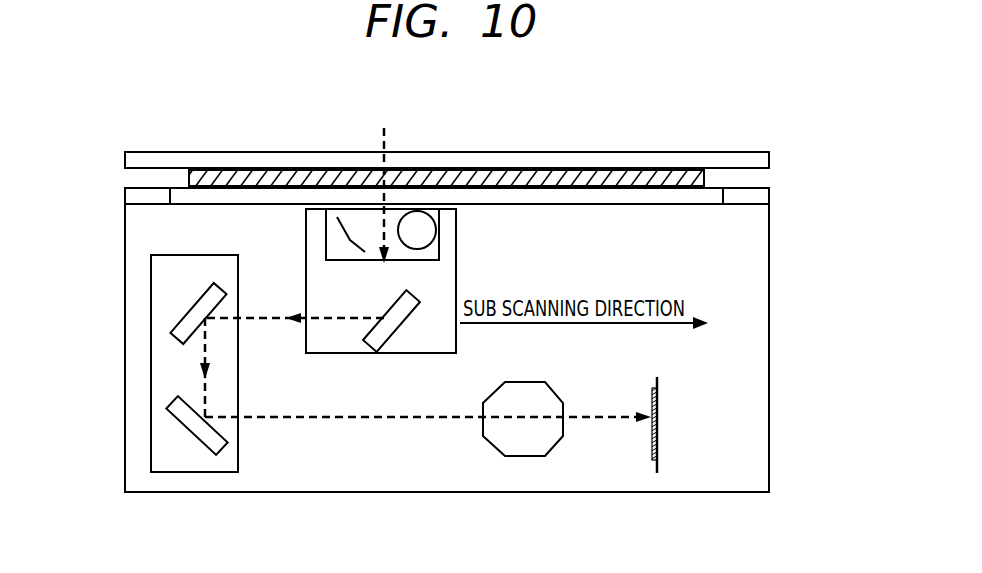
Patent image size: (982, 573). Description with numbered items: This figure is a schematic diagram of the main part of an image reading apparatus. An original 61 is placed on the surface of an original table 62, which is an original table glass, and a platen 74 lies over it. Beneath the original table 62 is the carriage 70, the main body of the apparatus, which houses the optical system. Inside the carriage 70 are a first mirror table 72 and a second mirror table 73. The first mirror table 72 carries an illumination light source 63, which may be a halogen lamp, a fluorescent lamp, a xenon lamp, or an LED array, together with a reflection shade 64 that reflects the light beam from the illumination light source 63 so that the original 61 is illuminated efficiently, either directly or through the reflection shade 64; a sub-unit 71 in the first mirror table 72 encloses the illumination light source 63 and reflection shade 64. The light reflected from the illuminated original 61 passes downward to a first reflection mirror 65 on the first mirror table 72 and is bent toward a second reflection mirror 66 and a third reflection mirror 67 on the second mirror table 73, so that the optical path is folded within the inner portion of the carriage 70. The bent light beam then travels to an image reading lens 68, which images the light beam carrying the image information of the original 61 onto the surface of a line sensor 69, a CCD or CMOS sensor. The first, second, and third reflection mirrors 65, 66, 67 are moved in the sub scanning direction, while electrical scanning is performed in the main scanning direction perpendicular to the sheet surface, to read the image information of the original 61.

The platen 74 is at (462, 154).
The original 61 is at (637, 162).
The original table 62 is at (214, 201).
The carriage 70 is at (778, 310).
The first mirror table 72 is at (458, 271).
The light source unit 71 is at (355, 261).
The illumination light source 63 is at (449, 230).
The reflection shade 64 is at (327, 235).
The first reflection mirror 65 is at (395, 333).
The second mirror table 73 is at (240, 390).
The second reflection mirror 66 is at (187, 312).
The third reflection mirror 67 is at (187, 435).
The image reading lens 68 is at (521, 465).
The line sensor 69 is at (671, 436).